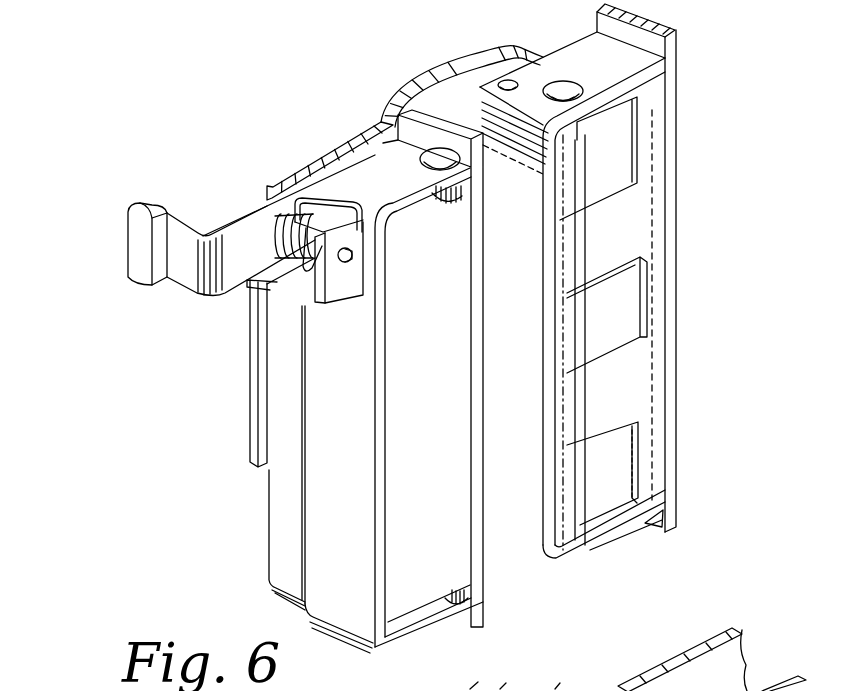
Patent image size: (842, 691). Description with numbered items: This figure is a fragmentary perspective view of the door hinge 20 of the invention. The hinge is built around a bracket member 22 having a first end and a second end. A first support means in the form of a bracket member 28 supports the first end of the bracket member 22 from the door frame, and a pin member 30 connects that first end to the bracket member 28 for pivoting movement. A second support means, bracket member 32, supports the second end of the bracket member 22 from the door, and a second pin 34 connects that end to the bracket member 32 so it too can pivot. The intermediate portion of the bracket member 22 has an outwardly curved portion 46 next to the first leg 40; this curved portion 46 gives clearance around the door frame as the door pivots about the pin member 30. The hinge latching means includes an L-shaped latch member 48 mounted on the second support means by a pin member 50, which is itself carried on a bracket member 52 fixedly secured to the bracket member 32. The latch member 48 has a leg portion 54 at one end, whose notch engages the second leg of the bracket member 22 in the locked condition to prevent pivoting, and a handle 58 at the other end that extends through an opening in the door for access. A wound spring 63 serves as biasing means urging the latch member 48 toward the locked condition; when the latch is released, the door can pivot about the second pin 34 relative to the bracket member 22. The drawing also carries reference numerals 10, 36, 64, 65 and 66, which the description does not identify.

The cassette holder assembly 10 is at (692, 312).
The door hinge 20 is at (586, 554).
The bracket member 22 is at (367, 122).
The bracket member (first support means) 28 is at (633, 63).
The pin member (first connecting means) 30 is at (560, 90).
The bracket member (second support means) 32 is at (380, 488).
The second pin (second connecting means) 34 is at (438, 167).
The bracket 36 is at (585, 690).
The first leg 40 is at (637, 690).
The outwardly curved portion 46 is at (417, 78).
The latch member 48 is at (204, 233).
The pin member 50 is at (352, 255).
The bracket member 52 is at (347, 288).
The leg portion 54 is at (327, 160).
The handle 58 is at (140, 203).
The wound spring 63 is at (305, 267).
The member 64 is at (501, 679).
The member 65 is at (463, 678).
The member 66 is at (543, 679).